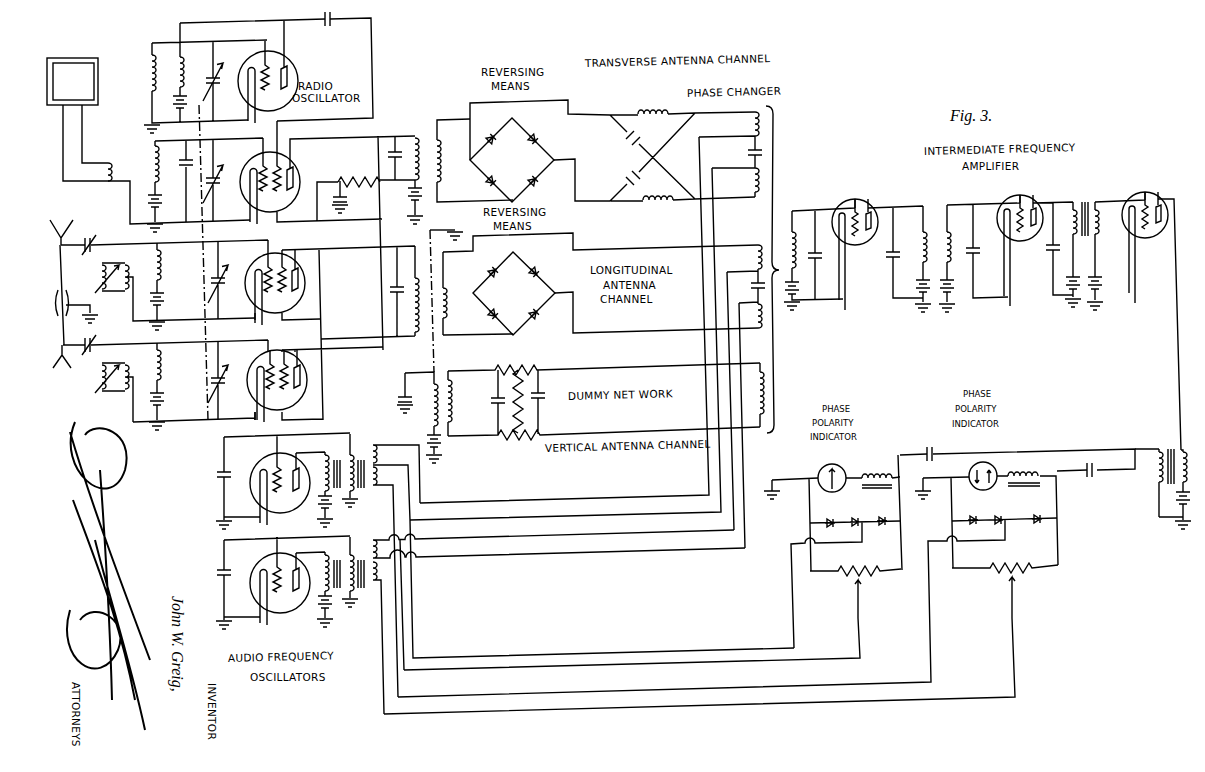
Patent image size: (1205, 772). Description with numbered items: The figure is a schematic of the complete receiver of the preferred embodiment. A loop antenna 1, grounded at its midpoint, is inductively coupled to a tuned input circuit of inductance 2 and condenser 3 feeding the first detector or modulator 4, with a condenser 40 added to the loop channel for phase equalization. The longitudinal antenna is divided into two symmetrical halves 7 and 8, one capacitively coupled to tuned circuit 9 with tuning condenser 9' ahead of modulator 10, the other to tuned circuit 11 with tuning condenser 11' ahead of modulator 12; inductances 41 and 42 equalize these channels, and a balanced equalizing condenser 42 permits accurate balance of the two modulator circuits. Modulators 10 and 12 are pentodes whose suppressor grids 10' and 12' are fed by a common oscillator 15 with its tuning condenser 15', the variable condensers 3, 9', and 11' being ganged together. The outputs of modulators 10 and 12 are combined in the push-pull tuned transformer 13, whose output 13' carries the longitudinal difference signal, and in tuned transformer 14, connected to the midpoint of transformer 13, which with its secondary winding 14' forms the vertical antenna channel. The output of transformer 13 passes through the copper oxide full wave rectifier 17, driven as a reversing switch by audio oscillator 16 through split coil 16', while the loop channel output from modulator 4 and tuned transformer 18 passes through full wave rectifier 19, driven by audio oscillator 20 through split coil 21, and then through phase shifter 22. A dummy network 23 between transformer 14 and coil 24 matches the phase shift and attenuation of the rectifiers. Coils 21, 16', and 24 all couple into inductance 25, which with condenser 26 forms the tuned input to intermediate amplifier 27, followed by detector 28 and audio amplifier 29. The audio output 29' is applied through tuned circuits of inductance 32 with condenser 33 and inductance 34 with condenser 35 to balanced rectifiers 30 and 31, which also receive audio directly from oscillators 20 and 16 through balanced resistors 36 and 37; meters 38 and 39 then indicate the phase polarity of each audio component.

The loop antenna 1 is at (98, 64).
The inductance 2 is at (121, 168).
The condenser 3 is at (218, 184).
The first detector or modulator 4 is at (299, 168).
The longitudinal antenna half 7 is at (62, 250).
The longitudinal antenna half 8 is at (65, 367).
The tuned circuit 9 is at (168, 286).
The tuning condenser 9' is at (223, 280).
The modulator 10 is at (269, 284).
The suppressor grid 10' is at (289, 309).
The tuned circuit 11 is at (170, 386).
The tuning condenser 11' is at (230, 380).
The modulator 12 is at (272, 382).
The suppressor grid 12' is at (290, 409).
The push-pull tuned transformer 13 is at (350, 292).
The transformer output 13' is at (462, 293).
The tuned transformer 14 is at (407, 417).
The coupling transformer secondary 14' is at (465, 403).
The oscillator 15 is at (283, 87).
The oscillator tuning condenser 15' is at (223, 88).
The audio oscillator 16 is at (280, 592).
The split coil 16' is at (766, 299).
The copper oxide full wave rectifier 17 is at (514, 293).
The tuned transformer 18 is at (431, 136).
The full wave rectifier 19 is at (512, 160).
The audio oscillator 20 is at (286, 514).
The split coil 21 is at (762, 125).
The phase shifter 22 is at (682, 155).
The dummy network 23 is at (539, 414).
The coil 24 is at (783, 399).
The inductance 25 is at (786, 247).
The condenser 26 is at (816, 268).
The intermediate amplifier 27 is at (845, 203).
The detector 28 is at (1020, 239).
The audio amplifier 29 is at (1145, 235).
The audio output 29' is at (1163, 477).
The balanced rectifier 30 is at (845, 573).
The balanced rectifier 31 is at (727, 597).
The inductance 32 is at (877, 464).
The condenser 33 is at (921, 445).
The inductance 34 is at (1023, 463).
The condenser 35 is at (1093, 484).
The balanced resistor 36 is at (652, 607).
The balanced resistor 37 is at (721, 628).
The meter 38 is at (832, 464).
The meter 39 is at (985, 462).
The condenser 40 is at (179, 176).
The inductance 41 is at (175, 292).
The inductance and balanced equalizing condenser 42 is at (82, 352).